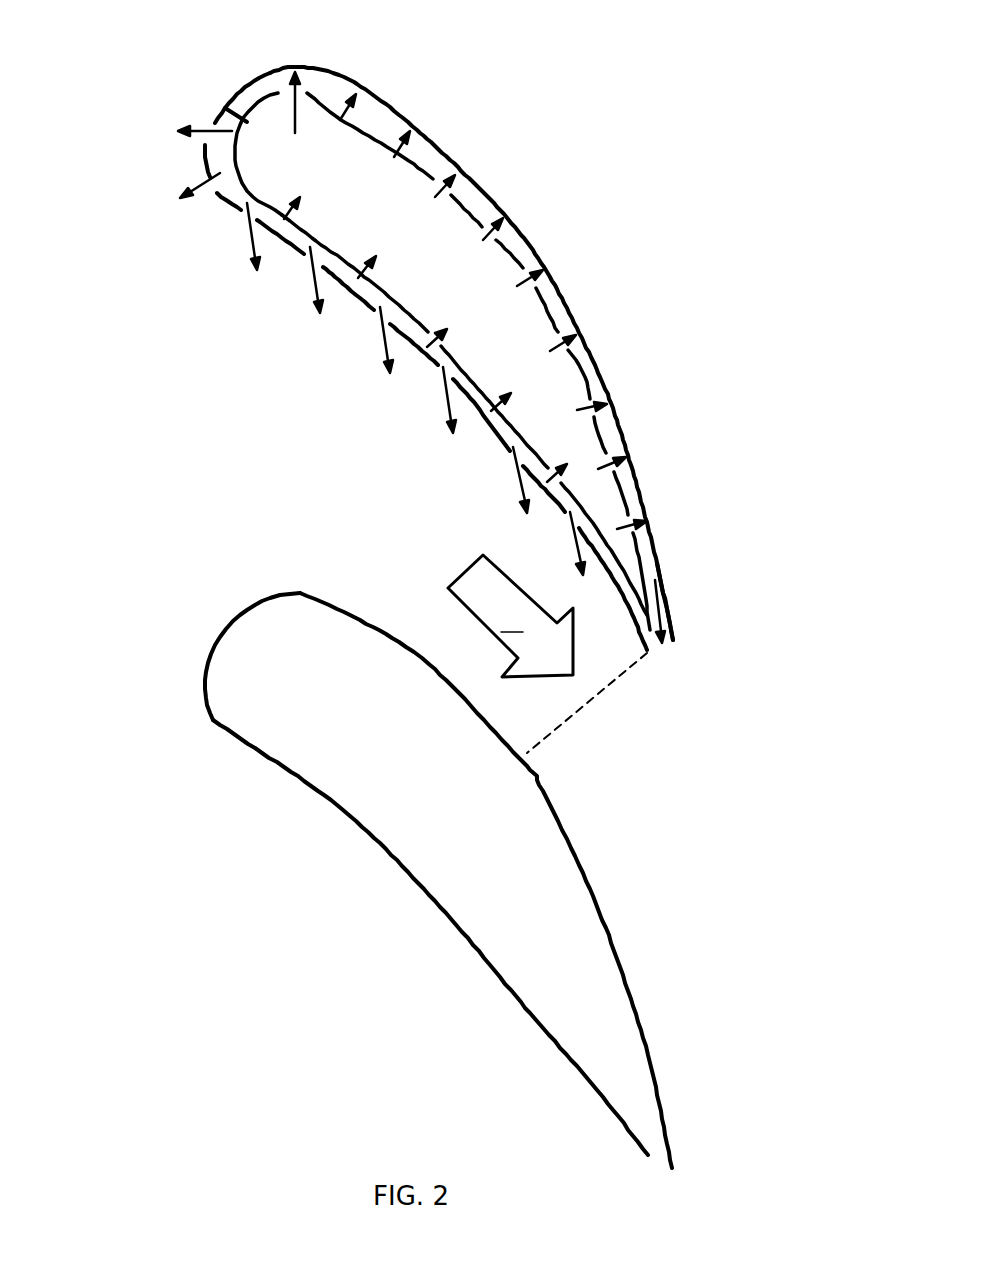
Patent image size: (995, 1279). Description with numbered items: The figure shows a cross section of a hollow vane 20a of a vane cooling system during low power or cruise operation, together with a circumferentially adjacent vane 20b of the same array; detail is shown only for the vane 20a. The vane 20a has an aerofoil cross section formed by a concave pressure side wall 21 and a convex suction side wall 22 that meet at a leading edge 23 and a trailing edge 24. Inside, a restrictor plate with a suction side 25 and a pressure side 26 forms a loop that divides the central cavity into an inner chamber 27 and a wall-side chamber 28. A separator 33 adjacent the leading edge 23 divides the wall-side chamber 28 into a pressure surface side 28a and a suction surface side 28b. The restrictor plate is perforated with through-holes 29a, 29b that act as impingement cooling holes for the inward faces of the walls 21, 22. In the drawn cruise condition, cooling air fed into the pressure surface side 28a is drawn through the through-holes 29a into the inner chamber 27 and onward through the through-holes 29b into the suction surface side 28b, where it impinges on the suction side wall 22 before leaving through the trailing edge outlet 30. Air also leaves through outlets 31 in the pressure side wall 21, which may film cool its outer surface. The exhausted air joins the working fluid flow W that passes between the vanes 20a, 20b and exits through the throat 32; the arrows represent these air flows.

The hollow vane 20a is at (467, 107).
The circumferentially adjacent vane 20b is at (167, 683).
The pressure side wall 21 is at (363, 303).
The suction side wall 22 is at (497, 191).
The leading edge 23 is at (248, 78).
The trailing edge 24 is at (675, 640).
The suction side of restrictor plate 25 is at (550, 313).
The pressure side of restrictor plate 26 is at (440, 357).
The inner chamber 27 is at (427, 277).
The wall-side chamber 28 is at (263, 87).
The pressure surface side of wall-side chamber 28a is at (562, 502).
The suction surface side of wall-side chamber 28b is at (587, 373).
The pressure side through-holes 29a is at (358, 268).
The suction side through-holes 29b is at (527, 273).
The trailing edge outlet 30 is at (652, 652).
The pressure side wall outlets 31 is at (445, 383).
The throat 32 is at (592, 702).
The separator 33 is at (223, 105).